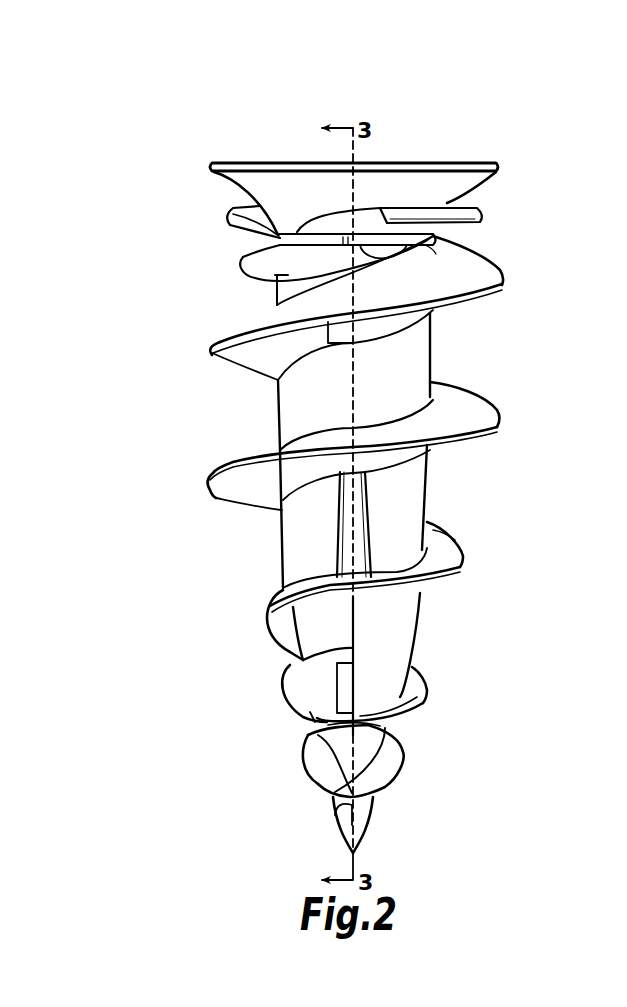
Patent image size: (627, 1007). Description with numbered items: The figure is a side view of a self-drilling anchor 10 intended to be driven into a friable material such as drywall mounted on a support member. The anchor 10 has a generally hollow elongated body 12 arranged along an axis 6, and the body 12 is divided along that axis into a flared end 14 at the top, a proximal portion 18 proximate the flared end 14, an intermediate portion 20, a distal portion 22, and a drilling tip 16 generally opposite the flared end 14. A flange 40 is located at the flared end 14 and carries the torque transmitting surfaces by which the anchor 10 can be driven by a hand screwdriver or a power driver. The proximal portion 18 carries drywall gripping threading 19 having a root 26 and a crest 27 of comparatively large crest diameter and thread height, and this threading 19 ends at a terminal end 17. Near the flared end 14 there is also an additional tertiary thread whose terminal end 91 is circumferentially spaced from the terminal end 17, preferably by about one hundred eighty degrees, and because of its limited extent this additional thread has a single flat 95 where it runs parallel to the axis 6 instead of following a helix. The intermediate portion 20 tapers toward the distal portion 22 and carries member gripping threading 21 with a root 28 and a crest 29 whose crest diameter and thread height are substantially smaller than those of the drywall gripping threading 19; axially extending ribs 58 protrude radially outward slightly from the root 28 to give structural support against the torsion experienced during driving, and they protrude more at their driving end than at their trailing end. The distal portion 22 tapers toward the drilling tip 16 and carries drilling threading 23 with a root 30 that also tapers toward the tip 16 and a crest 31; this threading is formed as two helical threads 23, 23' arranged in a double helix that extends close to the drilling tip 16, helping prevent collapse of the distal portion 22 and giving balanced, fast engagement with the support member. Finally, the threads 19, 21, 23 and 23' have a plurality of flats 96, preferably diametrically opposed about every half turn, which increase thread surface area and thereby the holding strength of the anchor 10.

The self-drilling anchor 10 is at (530, 158).
The axis 6 is at (357, 147).
The flange 40 is at (243, 178).
The flared end 14 is at (243, 181).
The terminal end of proximal portion threading 17 is at (240, 210).
The terminal end of additional thread 91 is at (462, 210).
The root 26 is at (272, 292).
The flat 95 is at (435, 245).
The drywall gripping threading 19 is at (490, 271).
The crest 27 is at (210, 346).
The elongated body 12 is at (433, 332).
The crest 29 is at (462, 552).
The member gripping threading 21 is at (433, 530).
The ribs 58 is at (350, 537).
The root 28 is at (418, 592).
The drilling threading 23 is at (406, 685).
The helical thread 23' is at (399, 760).
The crest 31 is at (305, 758).
The root 30 is at (336, 798).
The drilling tip 16 is at (378, 803).
The flats 96 is at (363, 313).
The proximal portion 18 is at (160, 304).
The intermediate portion 20 is at (248, 672).
The distal portion 22 is at (258, 842).